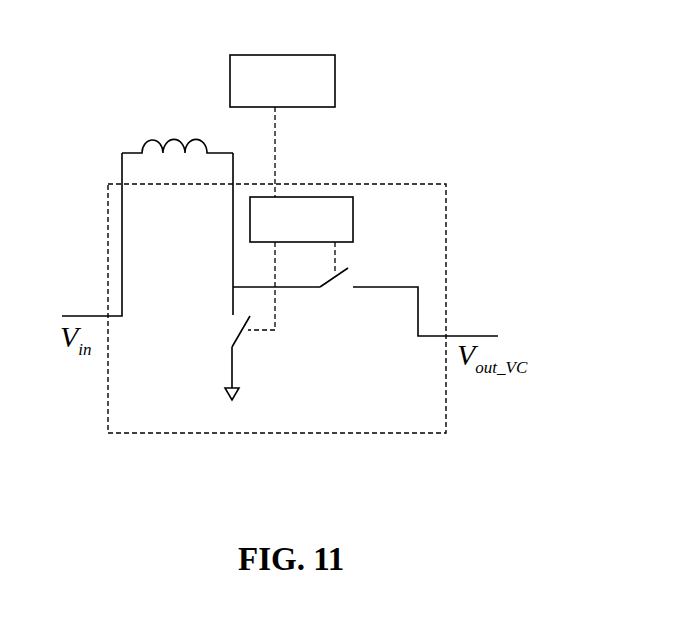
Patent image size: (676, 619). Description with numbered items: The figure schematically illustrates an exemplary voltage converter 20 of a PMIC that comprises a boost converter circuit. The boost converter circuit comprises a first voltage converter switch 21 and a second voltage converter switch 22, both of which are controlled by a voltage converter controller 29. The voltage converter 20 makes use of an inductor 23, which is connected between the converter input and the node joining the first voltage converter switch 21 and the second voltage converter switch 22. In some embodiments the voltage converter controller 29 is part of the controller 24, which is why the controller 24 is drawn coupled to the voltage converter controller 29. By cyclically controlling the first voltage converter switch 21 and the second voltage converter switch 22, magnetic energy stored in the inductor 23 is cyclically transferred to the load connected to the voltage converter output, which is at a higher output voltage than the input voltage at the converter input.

The voltage converter 20 is at (170, 435).
The first voltage converter switch 21 is at (243, 340).
The second voltage converter switch 22 is at (352, 275).
The inductor 23 is at (165, 115).
The controller 24 is at (340, 78).
The voltage converter controller 29 is at (325, 197).